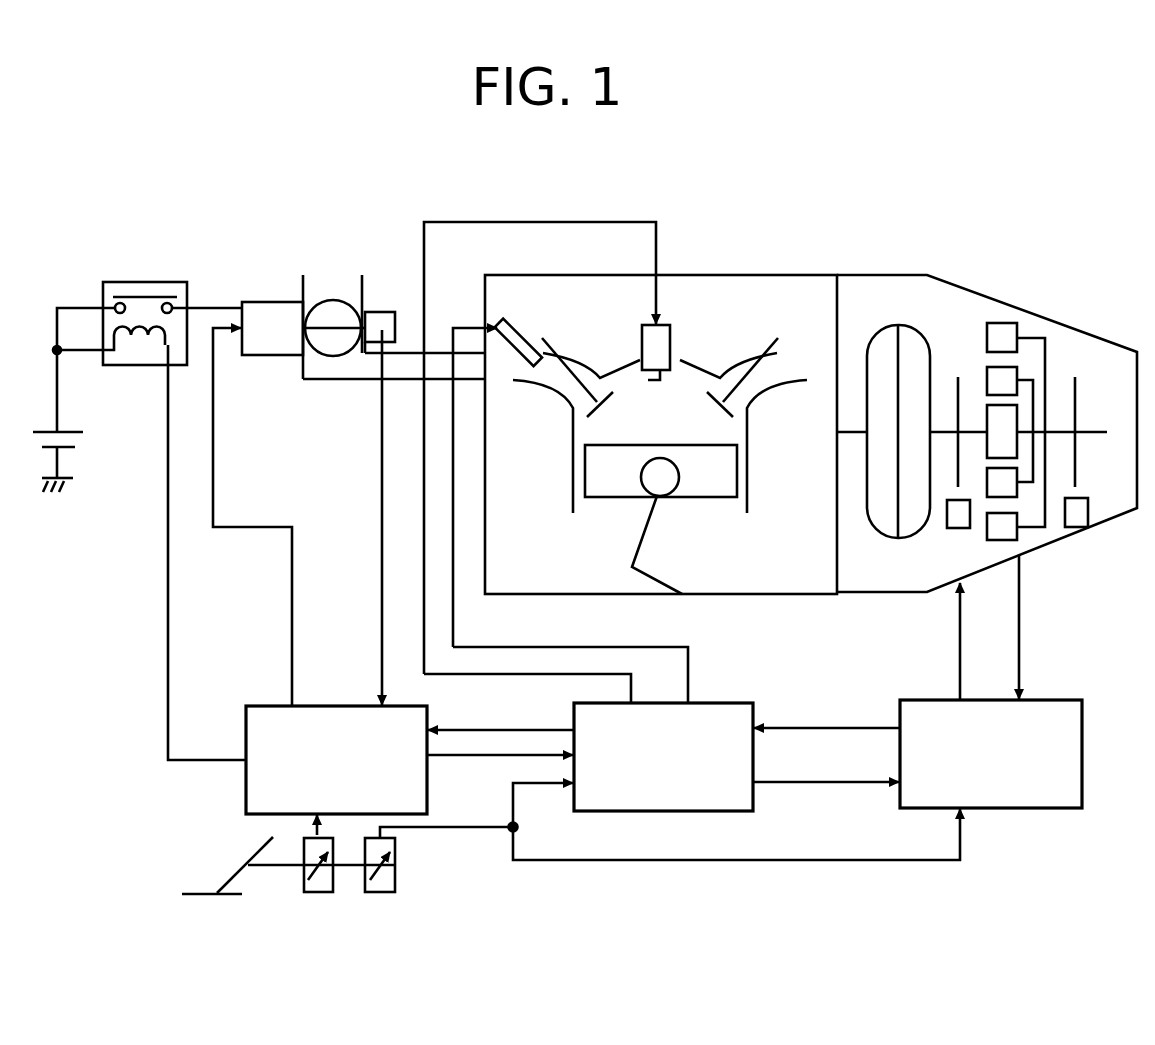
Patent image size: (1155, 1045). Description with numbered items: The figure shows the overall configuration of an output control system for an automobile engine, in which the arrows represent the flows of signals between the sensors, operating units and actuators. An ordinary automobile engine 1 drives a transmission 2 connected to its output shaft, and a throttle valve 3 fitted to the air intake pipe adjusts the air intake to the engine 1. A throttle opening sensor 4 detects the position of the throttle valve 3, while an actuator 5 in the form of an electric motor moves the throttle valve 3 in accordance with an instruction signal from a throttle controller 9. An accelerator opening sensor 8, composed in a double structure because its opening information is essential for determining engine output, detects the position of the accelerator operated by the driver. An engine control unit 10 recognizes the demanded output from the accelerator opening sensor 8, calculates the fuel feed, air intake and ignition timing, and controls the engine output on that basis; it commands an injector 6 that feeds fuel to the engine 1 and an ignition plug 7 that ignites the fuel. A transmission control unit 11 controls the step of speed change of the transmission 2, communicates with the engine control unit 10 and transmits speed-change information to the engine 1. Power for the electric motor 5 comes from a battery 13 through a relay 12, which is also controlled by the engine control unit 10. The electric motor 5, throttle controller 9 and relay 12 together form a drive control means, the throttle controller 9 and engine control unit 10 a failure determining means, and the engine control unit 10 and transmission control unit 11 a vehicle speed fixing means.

The engine 1 is at (697, 273).
The transmission 2 is at (1011, 303).
The throttle valve 3 is at (333, 300).
The throttle opening sensor 4 is at (392, 311).
The actuator 5 is at (269, 302).
The injector 6 is at (510, 323).
The ignition plug 7 is at (670, 322).
The accelerator opening sensor 8 is at (340, 878).
The throttle controller 9 is at (327, 705).
The engine control unit 10 is at (755, 803).
The transmission control unit 11 is at (1060, 810).
The relay 12 is at (160, 283).
The battery 13 is at (85, 440).